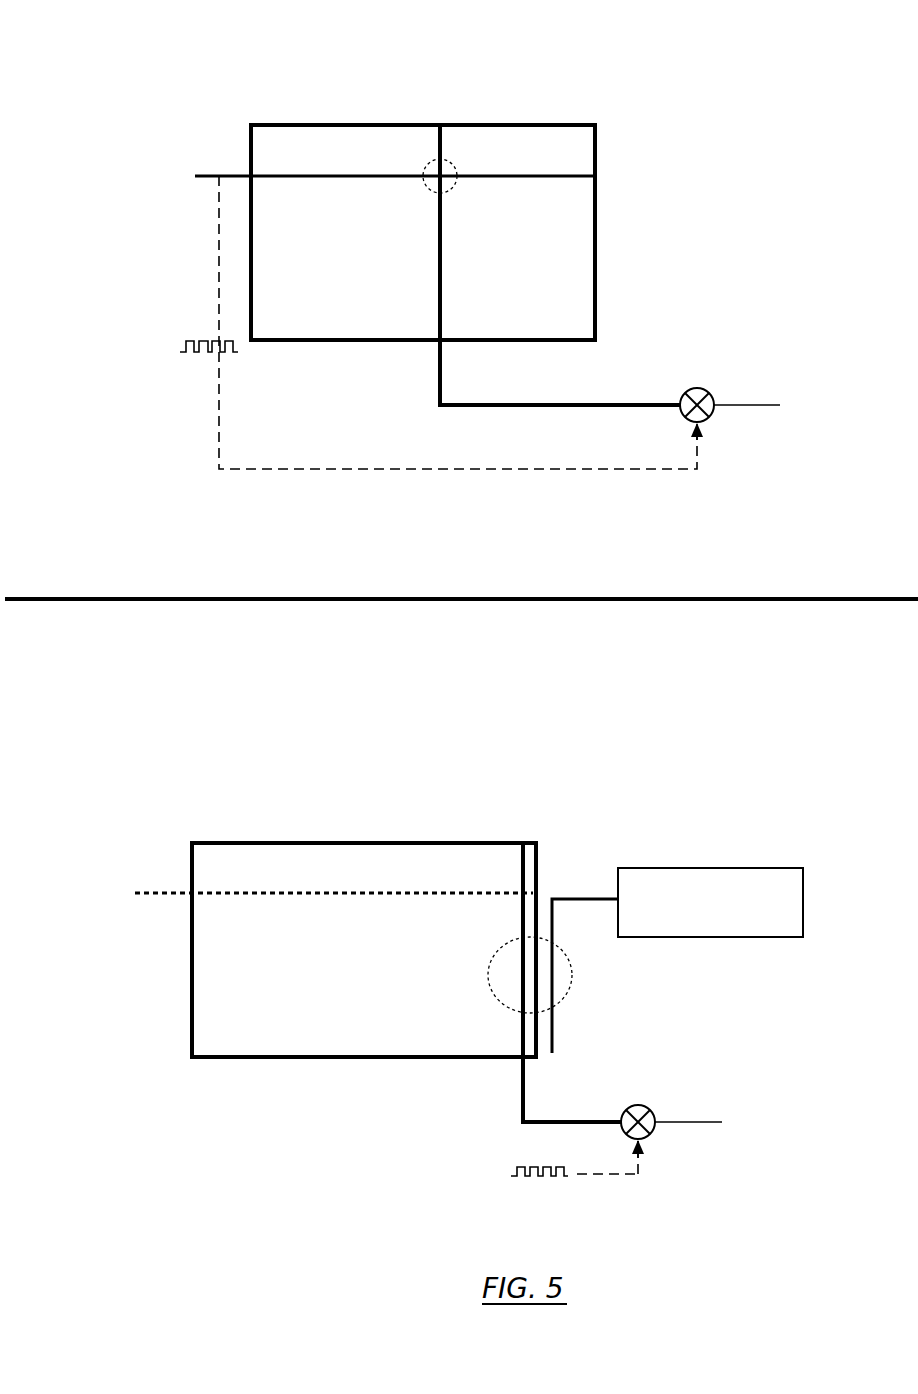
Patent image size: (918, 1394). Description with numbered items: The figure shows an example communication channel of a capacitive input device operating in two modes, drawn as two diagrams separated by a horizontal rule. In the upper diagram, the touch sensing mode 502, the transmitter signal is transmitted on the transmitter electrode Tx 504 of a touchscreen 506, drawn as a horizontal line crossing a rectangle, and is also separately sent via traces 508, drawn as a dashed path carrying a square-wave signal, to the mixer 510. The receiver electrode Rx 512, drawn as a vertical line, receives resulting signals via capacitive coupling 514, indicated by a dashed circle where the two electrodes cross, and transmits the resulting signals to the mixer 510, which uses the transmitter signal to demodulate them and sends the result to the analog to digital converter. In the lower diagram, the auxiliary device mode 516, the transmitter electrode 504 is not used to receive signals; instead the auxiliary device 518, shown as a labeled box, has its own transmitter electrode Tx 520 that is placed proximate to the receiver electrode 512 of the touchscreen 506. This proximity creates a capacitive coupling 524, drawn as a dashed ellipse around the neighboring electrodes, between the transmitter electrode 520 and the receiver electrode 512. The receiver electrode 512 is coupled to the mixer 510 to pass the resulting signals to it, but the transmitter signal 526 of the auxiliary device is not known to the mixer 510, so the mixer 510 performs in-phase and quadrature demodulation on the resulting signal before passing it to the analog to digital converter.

The touch sensing mode 502 is at (802, 57).
The transmitter electrode Tx 504 is at (174, 119).
The touchscreen 506 is at (649, 224).
The traces 508 is at (174, 286).
The mixer 510 is at (794, 372).
The receiver electrode Rx 512 is at (316, 386).
The capacitive coupling 514 is at (352, 36).
The auxiliary device mode 516 is at (742, 789).
The auxiliary device 518 is at (756, 899).
The transmitter electrode Tx 520 is at (712, 997).
The capacitive coupling 524 is at (523, 701).
The transmitter signal 526 is at (471, 1239).